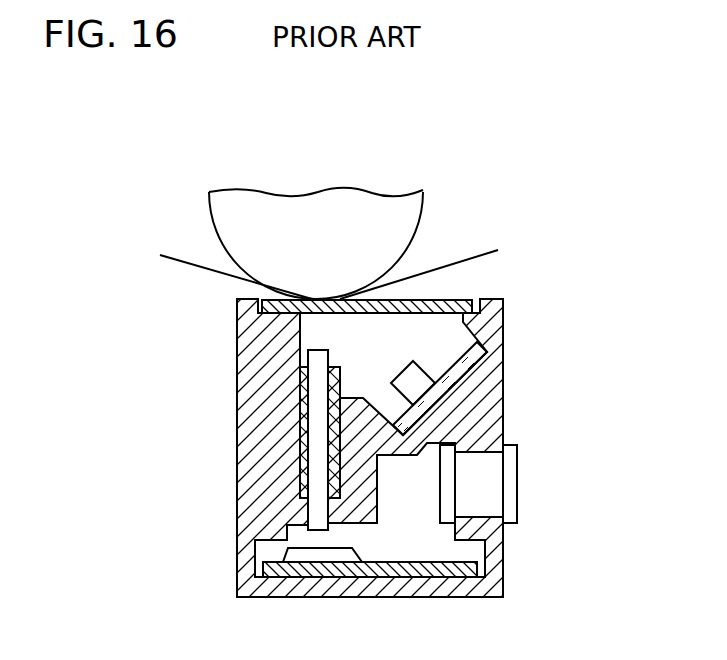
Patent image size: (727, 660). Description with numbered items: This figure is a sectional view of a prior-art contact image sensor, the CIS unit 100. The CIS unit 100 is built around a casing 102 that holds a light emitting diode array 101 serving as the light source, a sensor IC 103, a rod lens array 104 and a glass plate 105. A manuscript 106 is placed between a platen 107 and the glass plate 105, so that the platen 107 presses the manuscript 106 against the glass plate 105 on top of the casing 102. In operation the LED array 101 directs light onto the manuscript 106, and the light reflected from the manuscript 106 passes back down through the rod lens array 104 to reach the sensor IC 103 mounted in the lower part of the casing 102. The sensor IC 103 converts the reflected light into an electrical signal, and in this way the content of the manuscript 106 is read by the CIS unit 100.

The CIS unit 100 is at (585, 208).
The light emitting diode (LED) array 101 is at (447, 380).
The casing 102 is at (494, 585).
The sensor IC 103 is at (298, 556).
The rod lens array 104 is at (326, 417).
The glass plate 105 is at (455, 298).
The manuscript 106 is at (477, 252).
The platen 107 is at (317, 212).